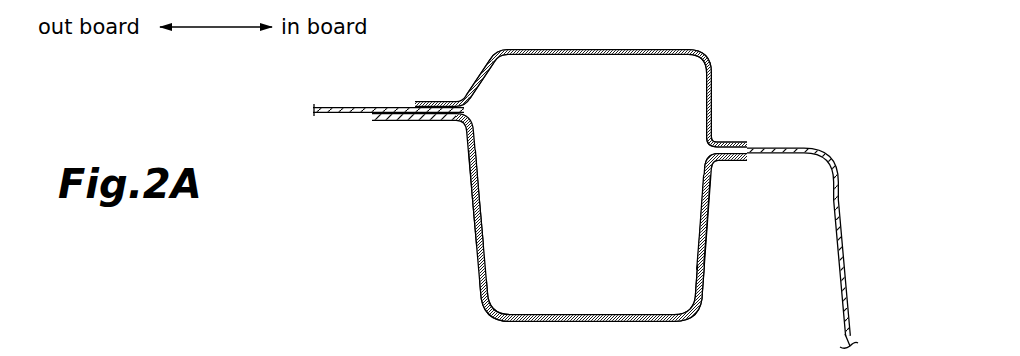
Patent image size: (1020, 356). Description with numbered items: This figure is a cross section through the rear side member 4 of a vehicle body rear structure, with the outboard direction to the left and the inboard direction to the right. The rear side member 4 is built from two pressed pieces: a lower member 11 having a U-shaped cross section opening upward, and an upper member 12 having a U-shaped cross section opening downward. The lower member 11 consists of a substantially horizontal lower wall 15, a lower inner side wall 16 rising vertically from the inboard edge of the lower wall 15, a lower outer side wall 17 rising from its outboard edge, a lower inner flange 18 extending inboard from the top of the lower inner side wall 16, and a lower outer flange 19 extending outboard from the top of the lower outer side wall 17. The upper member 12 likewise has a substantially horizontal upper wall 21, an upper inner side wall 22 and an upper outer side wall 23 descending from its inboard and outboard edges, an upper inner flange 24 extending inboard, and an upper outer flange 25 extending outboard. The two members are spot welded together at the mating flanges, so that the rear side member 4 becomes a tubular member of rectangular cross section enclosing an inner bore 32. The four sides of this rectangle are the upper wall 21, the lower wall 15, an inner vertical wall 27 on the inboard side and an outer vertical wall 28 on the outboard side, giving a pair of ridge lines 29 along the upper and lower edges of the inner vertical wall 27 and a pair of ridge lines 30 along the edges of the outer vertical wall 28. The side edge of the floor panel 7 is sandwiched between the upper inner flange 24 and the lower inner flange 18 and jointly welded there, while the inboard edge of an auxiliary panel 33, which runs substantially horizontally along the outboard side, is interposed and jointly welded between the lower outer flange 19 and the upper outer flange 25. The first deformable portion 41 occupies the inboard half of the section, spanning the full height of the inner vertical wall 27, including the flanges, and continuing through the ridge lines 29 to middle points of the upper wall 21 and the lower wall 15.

The rear side member 4 is at (748, 42).
The floor panel 7 is at (847, 237).
The lower member 11 is at (477, 258).
The upper member 12 is at (477, 72).
The lower wall 15 is at (603, 322).
The lower inner side wall 16 is at (709, 206).
The lower outer side wall 17 is at (467, 178).
The lower inner flange 18 is at (731, 161).
The lower outer flange 19 is at (407, 122).
The upper wall 21 is at (592, 50).
The upper inner side wall 22 is at (712, 107).
The upper outer side wall 23 is at (466, 88).
The upper inner flange 24 is at (732, 143).
The upper outer flange 25 is at (433, 101).
The inner vertical wall 27 is at (707, 240).
The outer vertical wall 28 is at (474, 213).
The ridge lines on the inboard side 29 is at (703, 62).
The ridge lines on the outboard side 30 is at (493, 51).
The inner bore 32 is at (608, 197).
The auxiliary panel 33 is at (343, 114).
The first deformable portion 41 is at (712, 81).